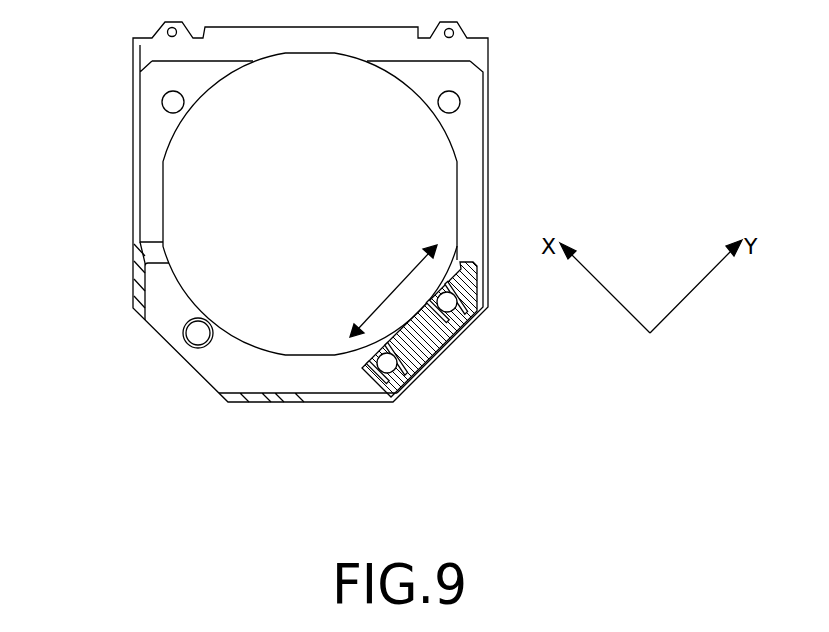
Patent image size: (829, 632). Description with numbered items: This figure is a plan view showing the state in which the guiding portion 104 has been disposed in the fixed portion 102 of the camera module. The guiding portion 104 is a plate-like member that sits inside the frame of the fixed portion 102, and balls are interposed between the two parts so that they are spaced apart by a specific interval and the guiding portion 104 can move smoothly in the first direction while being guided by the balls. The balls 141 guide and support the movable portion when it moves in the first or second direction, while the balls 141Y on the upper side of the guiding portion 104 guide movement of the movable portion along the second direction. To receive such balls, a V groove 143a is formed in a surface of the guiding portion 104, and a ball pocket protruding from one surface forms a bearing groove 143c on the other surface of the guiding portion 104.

The fixed portion 102 is at (140, 162).
The guiding portion 104 is at (318, 375).
The balls 141 is at (173, 102).
The balls 141Y is at (193, 342).
The V groove 143a is at (447, 302).
The bearing groove 143c is at (462, 316).